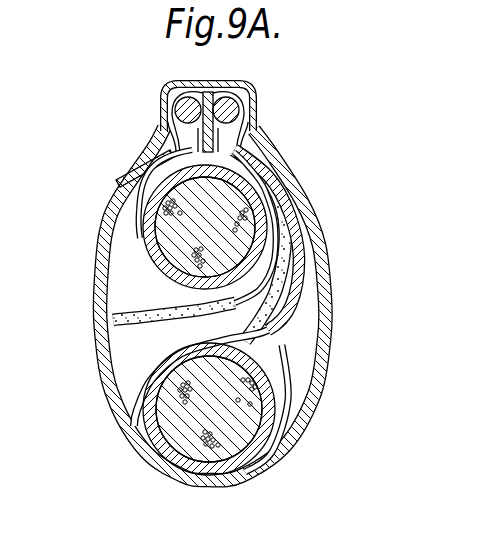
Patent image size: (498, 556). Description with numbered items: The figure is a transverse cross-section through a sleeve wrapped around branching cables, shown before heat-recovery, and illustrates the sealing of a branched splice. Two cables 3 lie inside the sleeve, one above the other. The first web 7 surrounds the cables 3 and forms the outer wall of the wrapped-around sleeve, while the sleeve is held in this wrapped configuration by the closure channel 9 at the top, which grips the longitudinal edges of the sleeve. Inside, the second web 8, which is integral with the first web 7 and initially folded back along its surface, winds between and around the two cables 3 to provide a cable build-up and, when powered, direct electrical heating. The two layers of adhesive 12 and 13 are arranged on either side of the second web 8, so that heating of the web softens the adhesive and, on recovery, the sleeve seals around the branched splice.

The cable 3 is at (172, 230).
The first web 7 is at (98, 350).
The second web 8 is at (135, 387).
The closure channel 9 is at (160, 100).
The layer of adhesive 12 is at (293, 302).
The layer of adhesive 13 is at (118, 318).